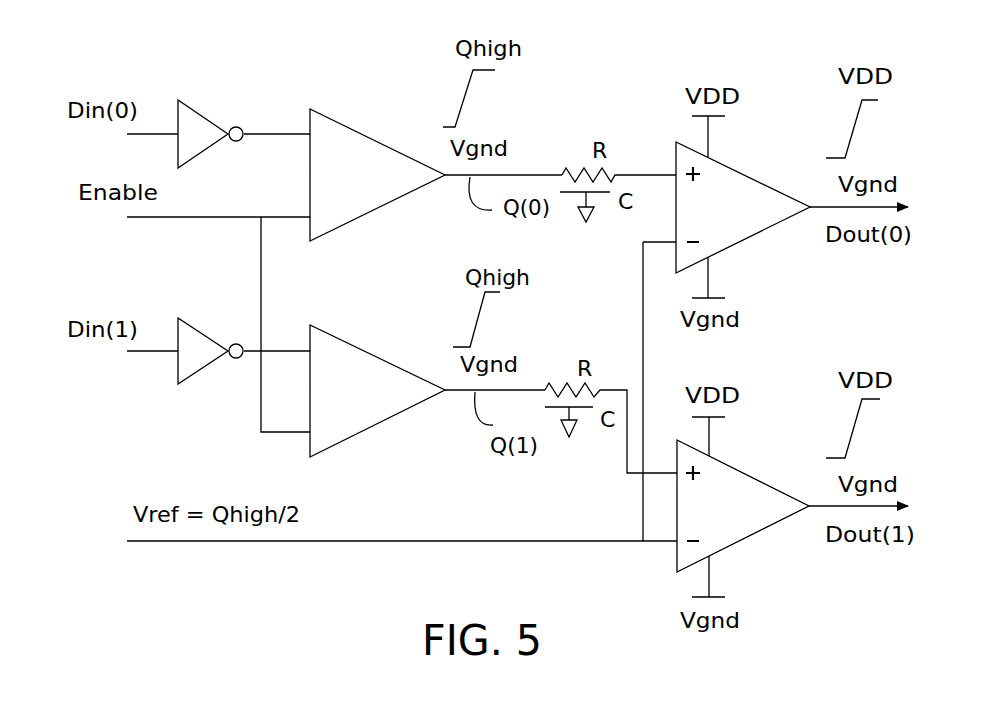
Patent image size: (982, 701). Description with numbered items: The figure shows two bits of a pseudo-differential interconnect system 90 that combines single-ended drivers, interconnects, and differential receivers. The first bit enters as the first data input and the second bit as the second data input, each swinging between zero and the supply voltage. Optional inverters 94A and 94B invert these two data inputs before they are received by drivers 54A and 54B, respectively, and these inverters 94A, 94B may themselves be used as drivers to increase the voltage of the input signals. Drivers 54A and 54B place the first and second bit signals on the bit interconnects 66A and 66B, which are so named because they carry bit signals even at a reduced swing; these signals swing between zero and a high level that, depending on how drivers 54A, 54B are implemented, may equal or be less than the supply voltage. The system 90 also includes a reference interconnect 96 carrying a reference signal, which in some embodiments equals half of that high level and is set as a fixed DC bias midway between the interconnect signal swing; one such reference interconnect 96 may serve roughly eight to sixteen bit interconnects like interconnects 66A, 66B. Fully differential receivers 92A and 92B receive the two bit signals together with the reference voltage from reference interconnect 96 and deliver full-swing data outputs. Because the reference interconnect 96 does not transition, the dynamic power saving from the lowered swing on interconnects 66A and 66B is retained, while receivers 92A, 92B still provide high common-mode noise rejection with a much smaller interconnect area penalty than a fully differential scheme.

The pseudo-differential interconnect system 90 is at (612, 80).
The inverter 94A is at (197, 110).
The inverter 94B is at (197, 328).
The driver 54A is at (380, 140).
The driver 54B is at (380, 355).
The interconnect 66A is at (463, 178).
The interconnect 66B is at (462, 393).
The fully differential receiver 92A is at (782, 190).
The fully differential receiver 92B is at (782, 488).
The reference interconnect 96 is at (378, 542).